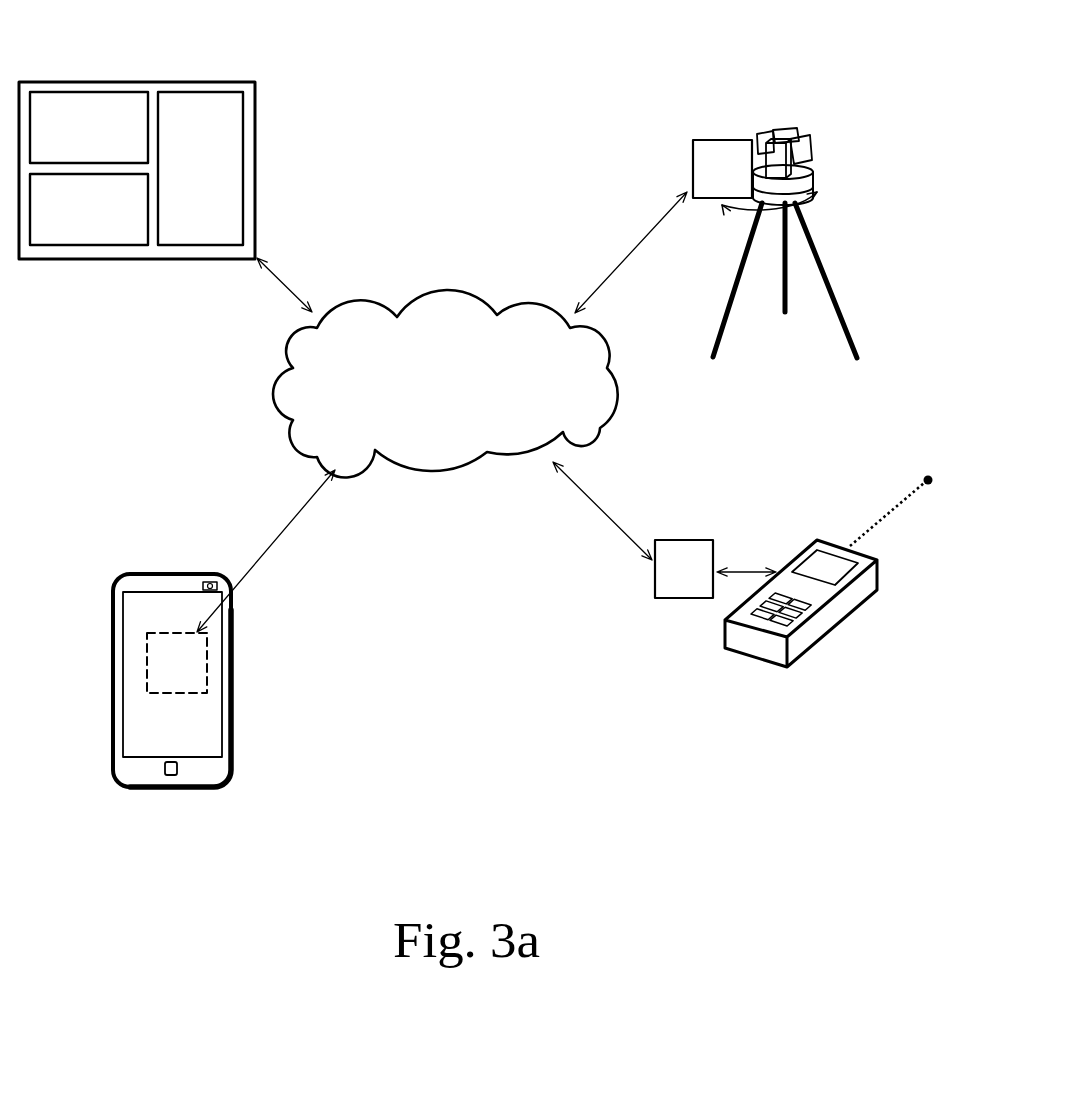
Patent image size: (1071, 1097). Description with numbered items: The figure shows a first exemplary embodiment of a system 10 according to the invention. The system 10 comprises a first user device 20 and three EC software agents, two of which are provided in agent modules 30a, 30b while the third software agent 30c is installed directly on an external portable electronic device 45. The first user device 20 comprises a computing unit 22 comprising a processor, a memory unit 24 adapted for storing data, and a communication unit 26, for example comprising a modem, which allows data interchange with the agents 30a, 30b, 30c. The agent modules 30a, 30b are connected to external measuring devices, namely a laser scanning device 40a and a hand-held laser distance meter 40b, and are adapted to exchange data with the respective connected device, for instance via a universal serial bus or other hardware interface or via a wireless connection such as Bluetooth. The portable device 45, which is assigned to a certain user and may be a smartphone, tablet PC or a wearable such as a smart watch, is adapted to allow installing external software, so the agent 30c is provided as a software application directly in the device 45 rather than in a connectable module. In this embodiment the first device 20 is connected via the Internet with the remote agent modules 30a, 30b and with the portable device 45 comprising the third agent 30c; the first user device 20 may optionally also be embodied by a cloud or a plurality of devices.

The system 10 is at (490, 52).
The first user device 20 is at (182, 168).
The computing unit 22 is at (89, 127).
The memory unit 24 is at (89, 209).
The communication unit 26 is at (200, 168).
The agent module 30a is at (693, 143).
The agent module 30b is at (670, 602).
The software agent 30c is at (207, 663).
The laser scanning device 40a is at (820, 122).
The hand-held laser distance meter 40b is at (820, 653).
The portable electronic device 45 is at (178, 656).